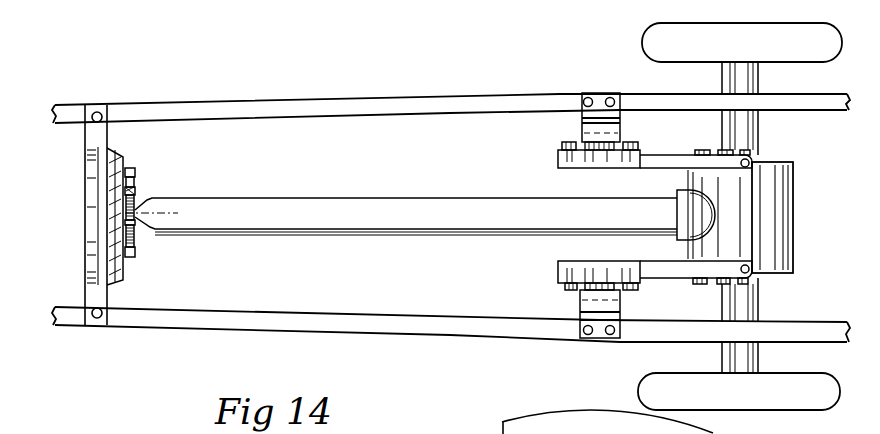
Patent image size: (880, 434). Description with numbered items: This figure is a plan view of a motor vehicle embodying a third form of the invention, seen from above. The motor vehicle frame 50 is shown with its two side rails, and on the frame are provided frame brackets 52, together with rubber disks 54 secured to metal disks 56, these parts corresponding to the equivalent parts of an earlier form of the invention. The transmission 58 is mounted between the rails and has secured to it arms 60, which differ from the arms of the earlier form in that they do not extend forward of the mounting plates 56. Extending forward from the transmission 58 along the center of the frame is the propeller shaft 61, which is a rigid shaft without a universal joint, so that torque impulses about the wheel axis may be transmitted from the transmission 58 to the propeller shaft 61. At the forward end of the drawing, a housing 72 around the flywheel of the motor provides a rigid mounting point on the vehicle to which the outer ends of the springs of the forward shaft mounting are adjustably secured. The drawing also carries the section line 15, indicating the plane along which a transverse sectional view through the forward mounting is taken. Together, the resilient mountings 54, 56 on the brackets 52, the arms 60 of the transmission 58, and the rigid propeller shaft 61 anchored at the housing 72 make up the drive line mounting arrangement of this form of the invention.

The section line 15- 15 is at (58, 243).
The motor vehicle frame 50 is at (335, 103).
The frame brackets 52 is at (582, 120).
The rubber disks 54 is at (617, 142).
The metal disks 56 is at (562, 152).
The transmission 58 is at (778, 205).
The arms 60 is at (622, 168).
The propeller shaft 61 is at (427, 202).
The housing 72 is at (125, 176).